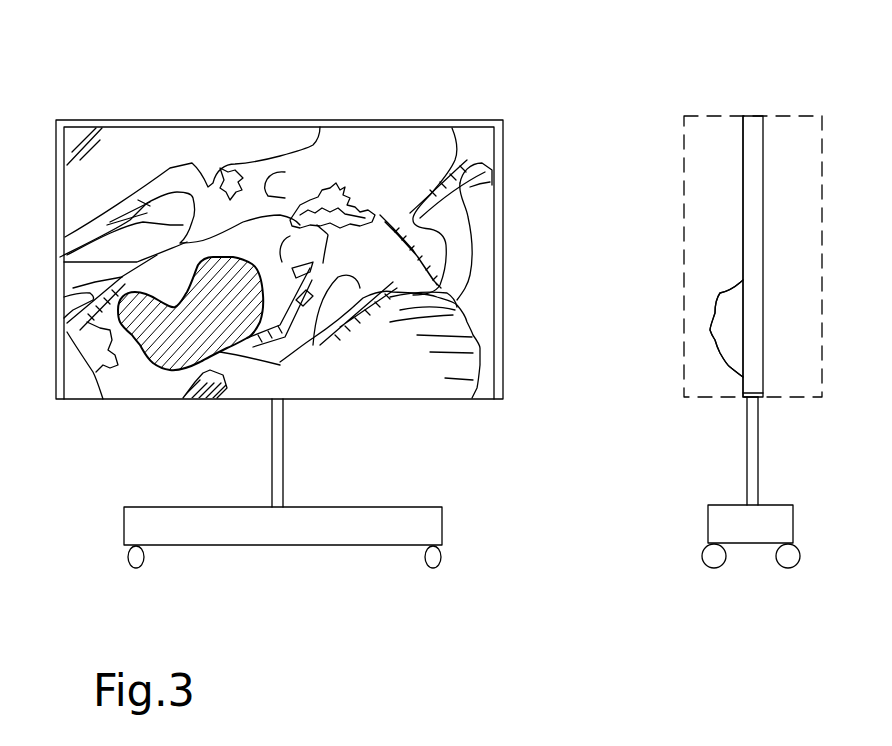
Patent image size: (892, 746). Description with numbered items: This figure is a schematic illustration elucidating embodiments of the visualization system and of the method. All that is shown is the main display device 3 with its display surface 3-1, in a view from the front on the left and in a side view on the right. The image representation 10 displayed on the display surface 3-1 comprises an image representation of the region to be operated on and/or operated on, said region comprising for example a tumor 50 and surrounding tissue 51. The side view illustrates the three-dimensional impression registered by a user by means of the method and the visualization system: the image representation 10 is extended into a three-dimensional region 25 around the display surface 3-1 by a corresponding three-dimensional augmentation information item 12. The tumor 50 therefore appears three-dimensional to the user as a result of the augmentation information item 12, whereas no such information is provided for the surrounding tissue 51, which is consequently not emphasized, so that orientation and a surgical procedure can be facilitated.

The main display device 3 is at (57, 121).
The display surface 3-1 is at (172, 153).
The image representation 10 is at (172, 153).
The three-dimensional augmentation information item 12 is at (723, 325).
The three-dimensional region 25 is at (793, 399).
The tumor 50 is at (723, 325).
The surrounding tissue 51 is at (407, 218).